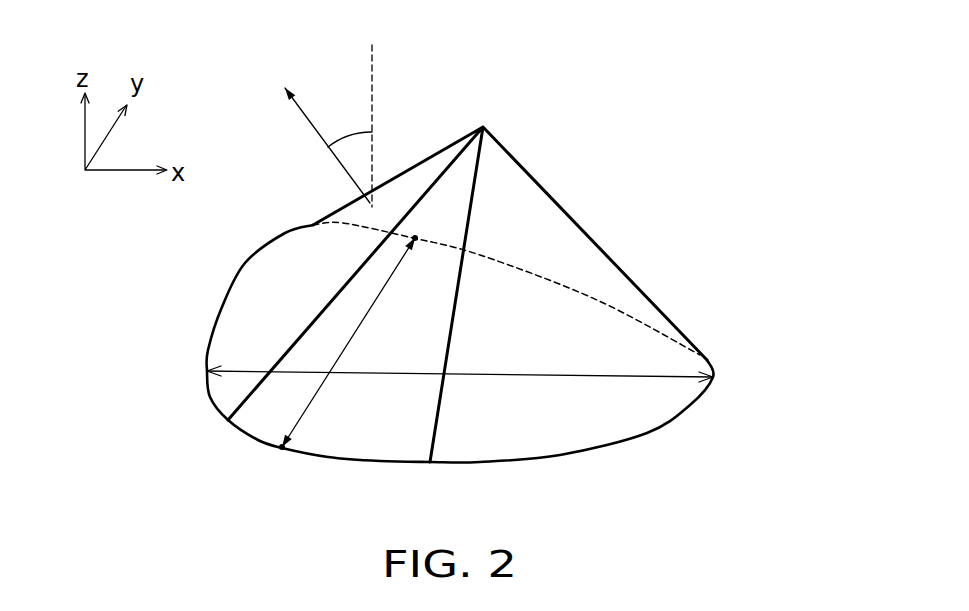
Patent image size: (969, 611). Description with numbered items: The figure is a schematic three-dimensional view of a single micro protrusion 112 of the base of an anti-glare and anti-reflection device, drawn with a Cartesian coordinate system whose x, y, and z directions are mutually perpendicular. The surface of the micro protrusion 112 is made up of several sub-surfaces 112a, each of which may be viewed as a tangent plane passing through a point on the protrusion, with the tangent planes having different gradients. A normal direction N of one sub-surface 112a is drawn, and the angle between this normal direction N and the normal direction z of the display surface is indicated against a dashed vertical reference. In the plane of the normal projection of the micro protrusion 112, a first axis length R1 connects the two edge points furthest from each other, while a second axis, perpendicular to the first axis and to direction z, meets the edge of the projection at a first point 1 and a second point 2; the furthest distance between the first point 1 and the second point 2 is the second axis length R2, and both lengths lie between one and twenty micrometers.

The micro protrusion 112 is at (843, 505).
The sub-surface 112a is at (400, 180).
The first point 1 is at (415, 238).
The second point 2 is at (278, 450).
The first axis length R1 is at (607, 377).
The second axis length R2 is at (363, 317).
The normal direction N is at (300, 109).